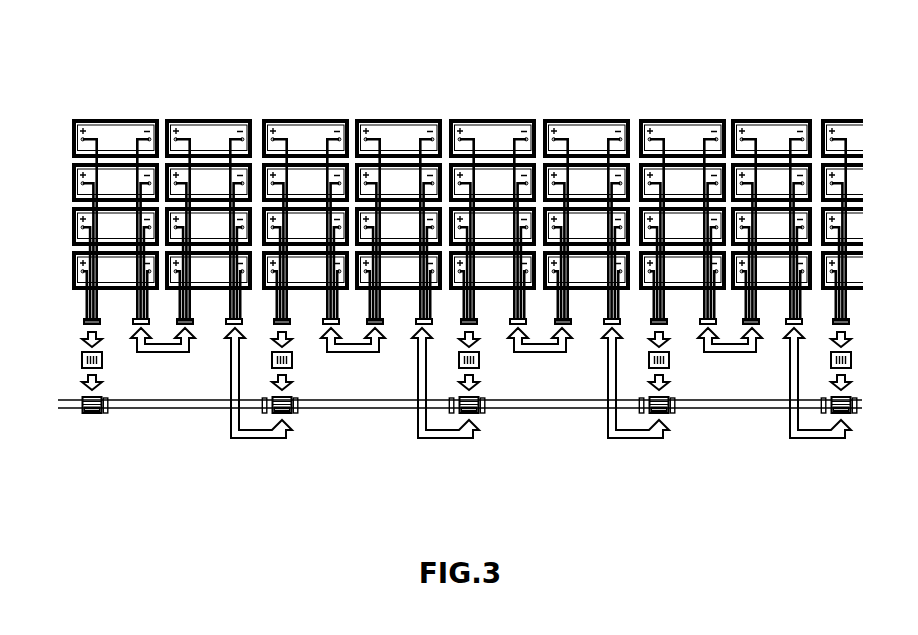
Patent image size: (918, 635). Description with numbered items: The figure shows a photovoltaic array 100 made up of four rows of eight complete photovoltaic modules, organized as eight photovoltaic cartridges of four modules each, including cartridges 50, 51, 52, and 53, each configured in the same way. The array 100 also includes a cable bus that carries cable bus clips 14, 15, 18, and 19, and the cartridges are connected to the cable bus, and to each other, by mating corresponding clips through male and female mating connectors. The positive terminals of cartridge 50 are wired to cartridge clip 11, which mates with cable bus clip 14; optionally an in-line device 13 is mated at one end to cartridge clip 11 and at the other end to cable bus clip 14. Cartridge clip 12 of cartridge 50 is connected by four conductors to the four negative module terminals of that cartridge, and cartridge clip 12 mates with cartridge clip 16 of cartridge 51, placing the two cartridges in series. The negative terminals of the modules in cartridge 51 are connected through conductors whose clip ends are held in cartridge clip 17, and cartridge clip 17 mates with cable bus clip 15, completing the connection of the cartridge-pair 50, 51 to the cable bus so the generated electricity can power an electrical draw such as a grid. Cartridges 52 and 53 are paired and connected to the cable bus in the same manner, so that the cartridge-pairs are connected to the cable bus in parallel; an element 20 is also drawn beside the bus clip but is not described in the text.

The photovoltaic array 100 is at (102, 68).
The photovoltaic cartridge 50 is at (157, 113).
The photovoltaic cartridge 51 is at (250, 113).
The photovoltaic cartridge 52 is at (347, 113).
The photovoltaic cartridge 53 is at (440, 113).
The cartridge clip 11 is at (82, 321).
The cartridge clip 12 is at (133, 321).
The cartridge clip 16 is at (178, 321).
The cartridge clip 17 is at (227, 321).
The in-line device 13 is at (82, 355).
The cable bus clip 14 is at (84, 398).
The cable bus clip 18 is at (84, 412).
The insulating spacer 20 is at (110, 413).
The cable bus clip 19 is at (291, 397).
The cable bus clip 15 is at (291, 413).